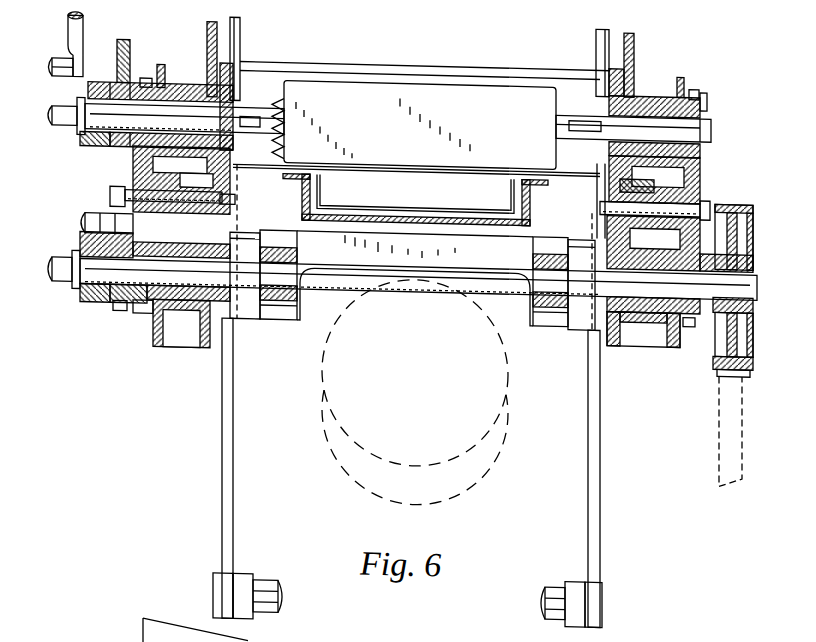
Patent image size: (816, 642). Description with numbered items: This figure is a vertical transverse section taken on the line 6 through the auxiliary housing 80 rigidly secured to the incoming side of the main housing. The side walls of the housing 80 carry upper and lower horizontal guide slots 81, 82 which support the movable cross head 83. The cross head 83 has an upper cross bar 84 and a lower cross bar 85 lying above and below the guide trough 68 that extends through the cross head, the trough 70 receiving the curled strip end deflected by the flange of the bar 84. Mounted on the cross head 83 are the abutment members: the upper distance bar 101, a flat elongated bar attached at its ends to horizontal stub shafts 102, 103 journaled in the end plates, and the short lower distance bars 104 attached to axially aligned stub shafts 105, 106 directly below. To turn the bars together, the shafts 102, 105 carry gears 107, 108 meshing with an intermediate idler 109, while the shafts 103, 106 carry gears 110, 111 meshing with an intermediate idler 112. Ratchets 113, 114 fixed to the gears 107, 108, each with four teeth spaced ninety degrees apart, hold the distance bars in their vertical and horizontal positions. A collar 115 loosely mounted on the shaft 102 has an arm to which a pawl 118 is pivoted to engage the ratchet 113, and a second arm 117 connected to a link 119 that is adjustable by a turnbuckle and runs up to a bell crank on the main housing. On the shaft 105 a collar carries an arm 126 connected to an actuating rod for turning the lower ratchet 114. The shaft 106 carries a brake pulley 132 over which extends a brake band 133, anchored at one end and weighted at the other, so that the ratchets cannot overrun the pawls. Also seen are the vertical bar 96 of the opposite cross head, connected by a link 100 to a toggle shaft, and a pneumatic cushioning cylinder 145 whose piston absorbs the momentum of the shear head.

The section line 6 is at (198, 617).
The guide trough 68 is at (532, 181).
The trough 70 is at (530, 200).
The housing 80 is at (645, 82).
The upper horizontal guide slot 81 is at (180, 80).
The lower horizontal guide slot 82 is at (152, 305).
The cross head 83 is at (222, 82).
The upper cross bar 84 is at (340, 51).
The lower cross bar 85 is at (415, 278).
The vertical bar 96 is at (232, 512).
The link 100 is at (233, 613).
The upper distance bar 101 is at (518, 88).
The stub shaft 102 is at (118, 115).
The stub shaft 103 is at (697, 114).
The lower distance bar 104 is at (247, 308).
The stub shaft 105 is at (88, 302).
The stub shaft 106 is at (705, 304).
The gear 107 is at (147, 75).
The gear 108 is at (137, 308).
The intermediate idler 109 is at (133, 173).
The gear 110 is at (700, 91).
The gear 111 is at (697, 301).
The intermediate idler 112 is at (697, 171).
The ratchet 113 is at (100, 156).
The ratchet 114 is at (137, 303).
The collar 115 is at (87, 151).
The arm 117 is at (92, 61).
The pawl 118 is at (127, 35).
The link 119 is at (80, 39).
The arm 126 is at (93, 227).
The brake pulley 132 is at (737, 223).
The brake band 133 is at (745, 186).
The pneumatic cushioning cylinder 145 is at (500, 419).